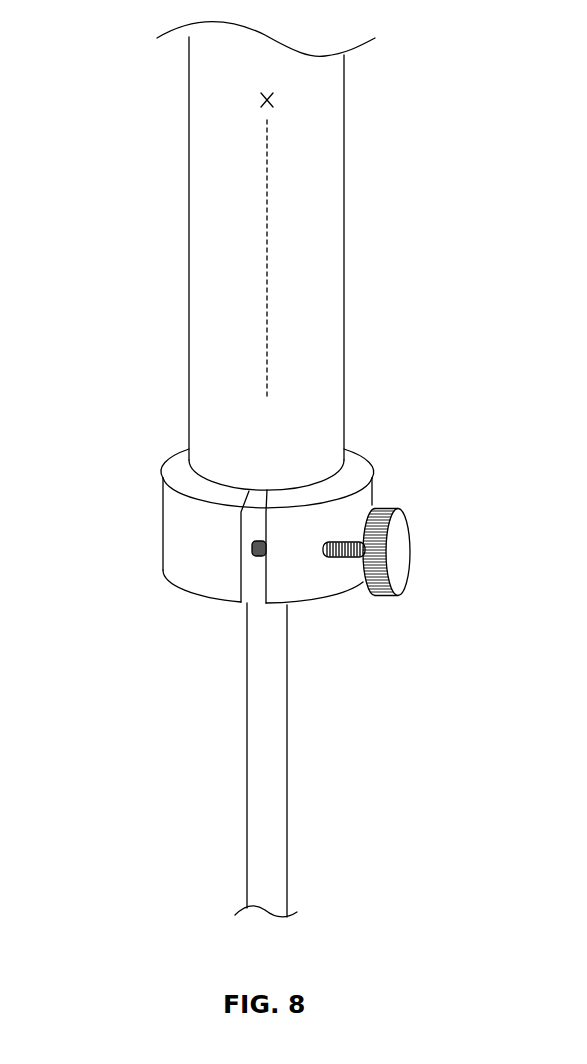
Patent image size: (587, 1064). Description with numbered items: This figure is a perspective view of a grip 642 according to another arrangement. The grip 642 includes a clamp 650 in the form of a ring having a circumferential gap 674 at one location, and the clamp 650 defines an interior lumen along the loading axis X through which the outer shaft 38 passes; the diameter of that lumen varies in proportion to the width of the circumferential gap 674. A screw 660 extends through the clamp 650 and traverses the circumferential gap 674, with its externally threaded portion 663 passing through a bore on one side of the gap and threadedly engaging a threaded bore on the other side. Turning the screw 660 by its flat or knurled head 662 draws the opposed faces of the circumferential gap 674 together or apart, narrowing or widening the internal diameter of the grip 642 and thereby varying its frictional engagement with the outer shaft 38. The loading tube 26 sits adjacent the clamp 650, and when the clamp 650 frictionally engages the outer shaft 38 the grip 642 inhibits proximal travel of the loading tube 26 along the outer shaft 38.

The loading tube 26 is at (344, 247).
The outer shaft 38 is at (244, 793).
The grip 642 is at (126, 420).
The clamp 650 is at (373, 480).
The screw 660 is at (343, 558).
The head 662 is at (400, 551).
The externally threaded portion 663 is at (258, 549).
The circumferential gap 674 is at (274, 486).